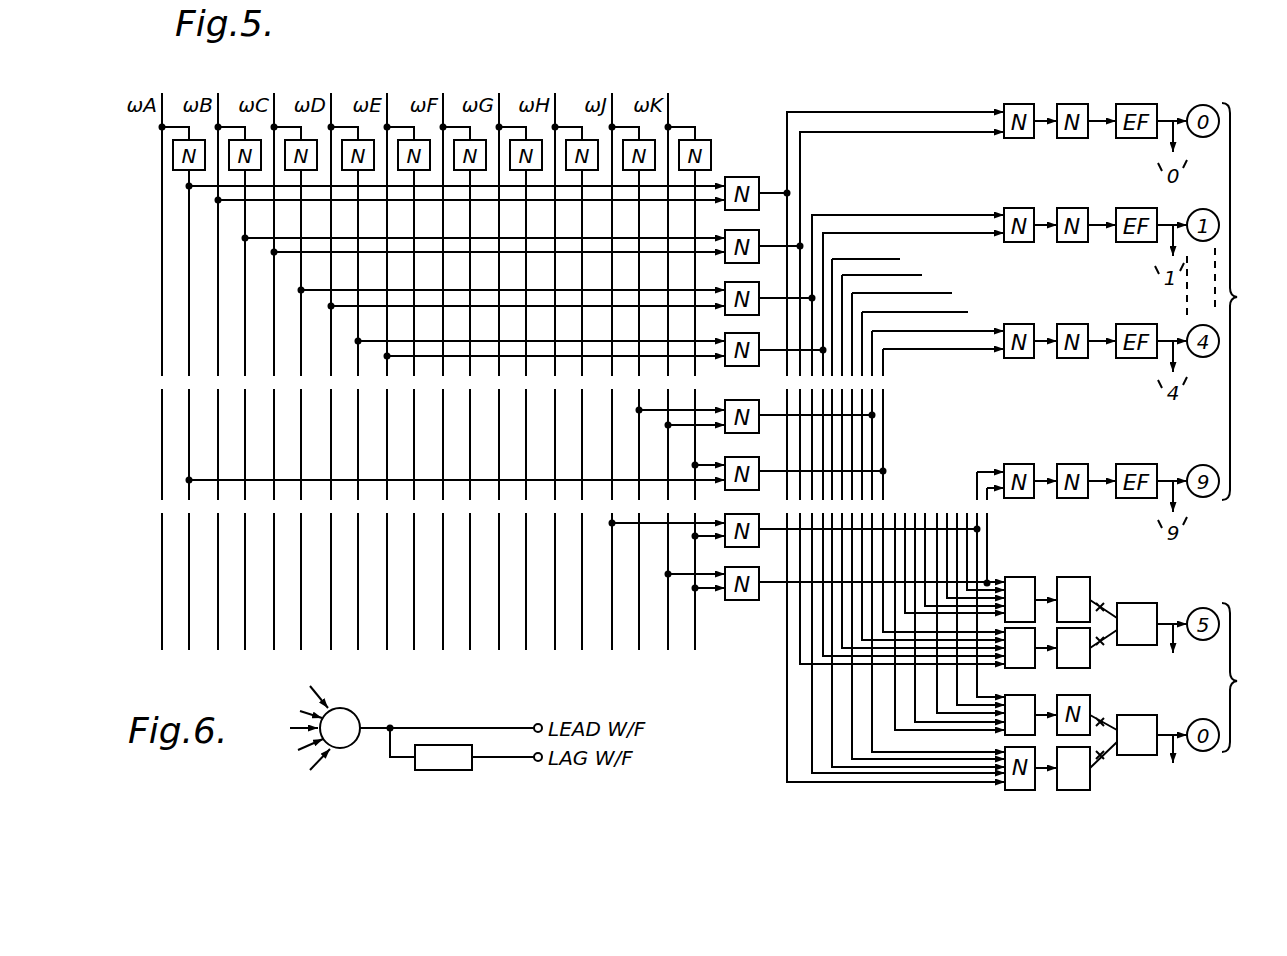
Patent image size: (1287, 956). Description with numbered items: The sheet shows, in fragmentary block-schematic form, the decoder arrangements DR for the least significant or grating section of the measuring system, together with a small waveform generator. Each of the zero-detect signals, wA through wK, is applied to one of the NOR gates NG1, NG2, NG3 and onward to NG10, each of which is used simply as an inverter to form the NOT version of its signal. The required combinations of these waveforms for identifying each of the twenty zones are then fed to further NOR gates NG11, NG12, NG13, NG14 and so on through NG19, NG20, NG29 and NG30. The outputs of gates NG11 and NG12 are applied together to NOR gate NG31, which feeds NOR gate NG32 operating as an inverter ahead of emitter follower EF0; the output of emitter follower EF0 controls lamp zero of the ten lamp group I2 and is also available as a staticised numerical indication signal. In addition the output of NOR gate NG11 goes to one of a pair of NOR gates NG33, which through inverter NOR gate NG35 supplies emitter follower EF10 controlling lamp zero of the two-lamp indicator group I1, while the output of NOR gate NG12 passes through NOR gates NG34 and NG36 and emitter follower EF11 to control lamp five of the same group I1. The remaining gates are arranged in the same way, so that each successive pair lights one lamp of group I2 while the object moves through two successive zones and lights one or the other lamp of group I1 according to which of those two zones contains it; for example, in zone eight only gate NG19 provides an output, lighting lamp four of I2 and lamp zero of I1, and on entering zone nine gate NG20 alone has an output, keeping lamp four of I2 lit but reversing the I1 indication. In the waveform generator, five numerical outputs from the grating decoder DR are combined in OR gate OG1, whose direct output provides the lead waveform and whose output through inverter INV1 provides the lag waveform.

In FIG. 5, the NOR gate NG1 is at (176, 118).
In FIG. 5, the NOR gate NG2 is at (231, 118).
In FIG. 5, the NOR gate NG3 is at (288, 118).
In FIG. 5, the NOR gate NG10 is at (700, 138).
In FIG. 5, the decoder arrangements DR is at (757, 119).
In FIG. 5, the NOR gate NG11 is at (743, 175).
In FIG. 5, the NOR gate NG12 is at (759, 232).
In FIG. 5, the NOR gate NG13 is at (760, 283).
In FIG. 5, the NOR gate NG14 is at (760, 335).
In FIG. 5, the NOR gate NG19 is at (761, 409).
In FIG. 5, the NOR gate NG20 is at (770, 455).
In FIG. 5, the NOR gate NG29 is at (770, 512).
In FIG. 5, the NOR gate NG30 is at (765, 606).
In FIG. 5, the NOR gate NG31 is at (1018, 140).
In FIG. 5, the NOR gate NG32 is at (1075, 140).
In FIG. 5, the NOR gate NG33 is at (1005, 730).
In FIG. 5, the NOR gate NG34 is at (1014, 630).
In FIG. 5, the inverter NOR gate NG35 is at (1088, 762).
In FIG. 5, the NOR gate NG36 is at (1084, 636).
In FIG. 5, the emitter follower EF0 is at (1134, 140).
In FIG. 5, the emitter follower EF10 is at (1178, 760).
In FIG. 5, the emitter follower EF11 is at (1160, 645).
In FIG. 5, the two-lamp indicator group I1 is at (1242, 677).
In FIG. 5, the ten lamp group I2 is at (1242, 301).
In FIG. 6, the OR gate OG1 is at (352, 708).
In FIG. 6, the inverter INV1 is at (430, 772).